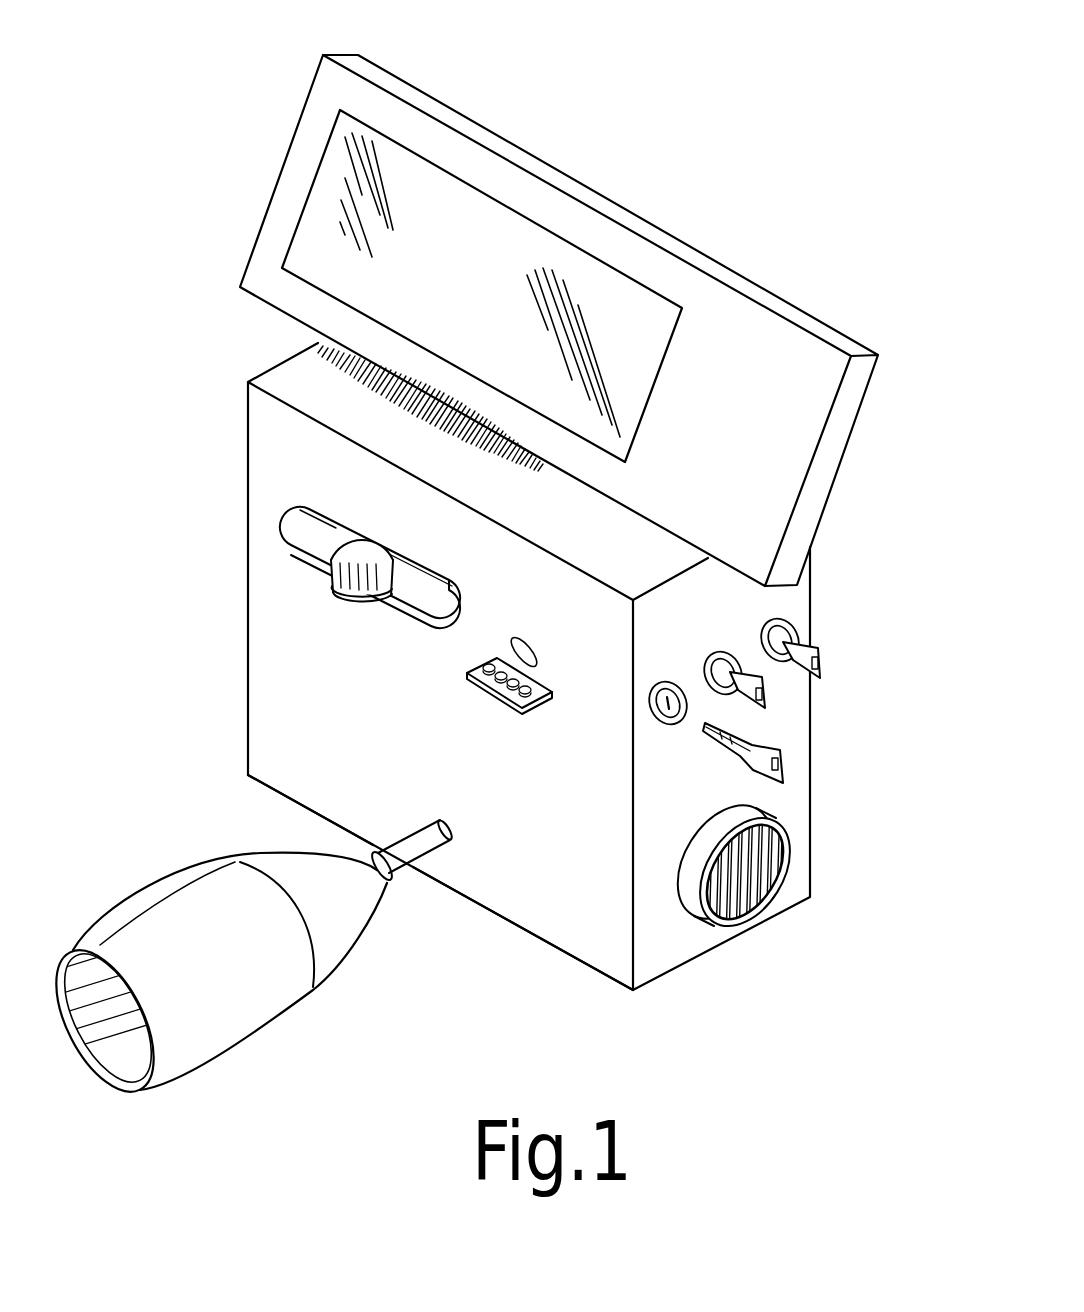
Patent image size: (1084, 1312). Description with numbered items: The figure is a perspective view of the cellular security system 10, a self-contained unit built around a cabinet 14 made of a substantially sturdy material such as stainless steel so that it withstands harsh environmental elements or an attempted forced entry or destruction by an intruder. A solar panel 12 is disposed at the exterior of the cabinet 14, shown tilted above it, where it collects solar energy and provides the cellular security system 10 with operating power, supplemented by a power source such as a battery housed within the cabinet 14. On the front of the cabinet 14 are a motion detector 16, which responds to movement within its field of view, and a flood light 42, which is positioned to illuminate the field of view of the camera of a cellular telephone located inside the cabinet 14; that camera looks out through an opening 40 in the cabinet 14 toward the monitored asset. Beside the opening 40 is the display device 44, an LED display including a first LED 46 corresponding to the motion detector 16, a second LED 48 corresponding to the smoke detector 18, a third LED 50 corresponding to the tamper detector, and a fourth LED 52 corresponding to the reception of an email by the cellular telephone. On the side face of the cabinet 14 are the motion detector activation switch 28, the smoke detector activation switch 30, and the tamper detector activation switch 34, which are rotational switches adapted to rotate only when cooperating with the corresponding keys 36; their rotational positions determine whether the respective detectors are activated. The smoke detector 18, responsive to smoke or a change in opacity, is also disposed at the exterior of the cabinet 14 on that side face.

The cellular security system 10 is at (630, 103).
The solar panel 12 is at (772, 352).
The cabinet 14 is at (293, 370).
The motion detector 16 is at (345, 548).
The smoke detector 18 is at (770, 850).
The motion detector activation switch 28 is at (663, 691).
The smoke detector activation switch 30 is at (720, 655).
The tamper detector activation switch 34 is at (795, 617).
The keys 36 is at (767, 696).
The opening 40 is at (518, 648).
The flood light 42 is at (222, 1008).
The display device 44 is at (498, 679).
The first LED 46 is at (482, 667).
The second LED 48 is at (537, 662).
The third LED 50 is at (540, 670).
The fourth LED 52 is at (533, 710).